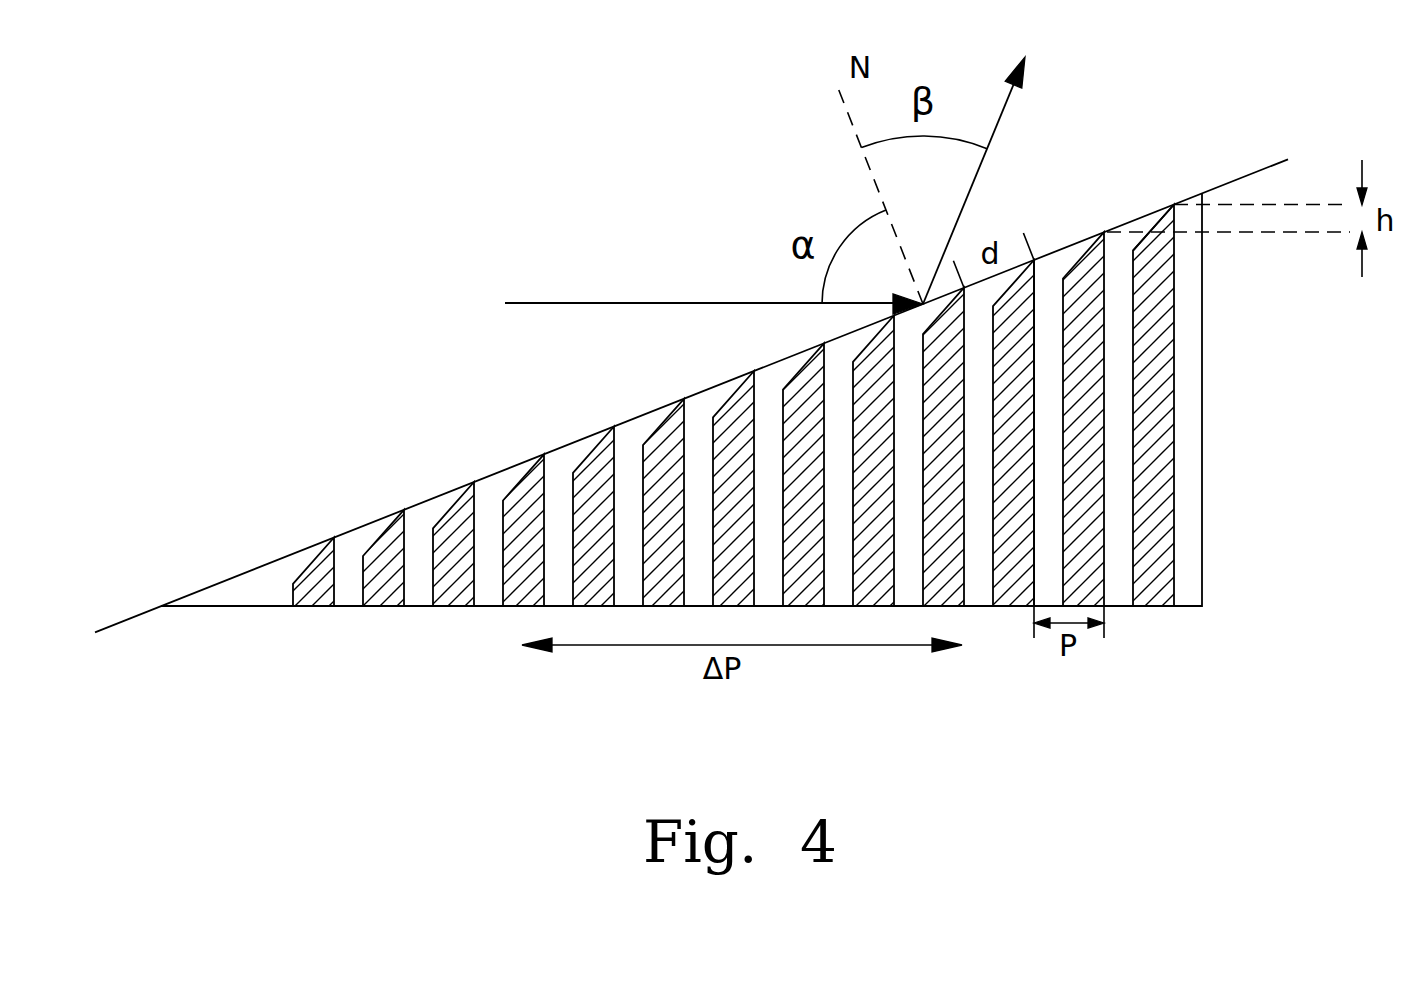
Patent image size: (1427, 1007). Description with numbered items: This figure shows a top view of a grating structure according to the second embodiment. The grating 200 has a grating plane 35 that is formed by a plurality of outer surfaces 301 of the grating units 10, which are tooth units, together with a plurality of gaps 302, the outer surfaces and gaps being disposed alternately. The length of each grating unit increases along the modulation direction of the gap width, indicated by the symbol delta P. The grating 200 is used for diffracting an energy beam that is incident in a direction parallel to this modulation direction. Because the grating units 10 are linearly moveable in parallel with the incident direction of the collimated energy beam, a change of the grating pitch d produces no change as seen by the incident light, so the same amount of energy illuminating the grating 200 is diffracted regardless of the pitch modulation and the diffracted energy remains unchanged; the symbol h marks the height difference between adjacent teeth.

The grating unit 10 is at (1147, 580).
The grating plane 35 is at (1250, 173).
The outer surface 301 is at (1148, 237).
The gap 302 is at (1052, 302).
The grating 200 is at (730, 386).